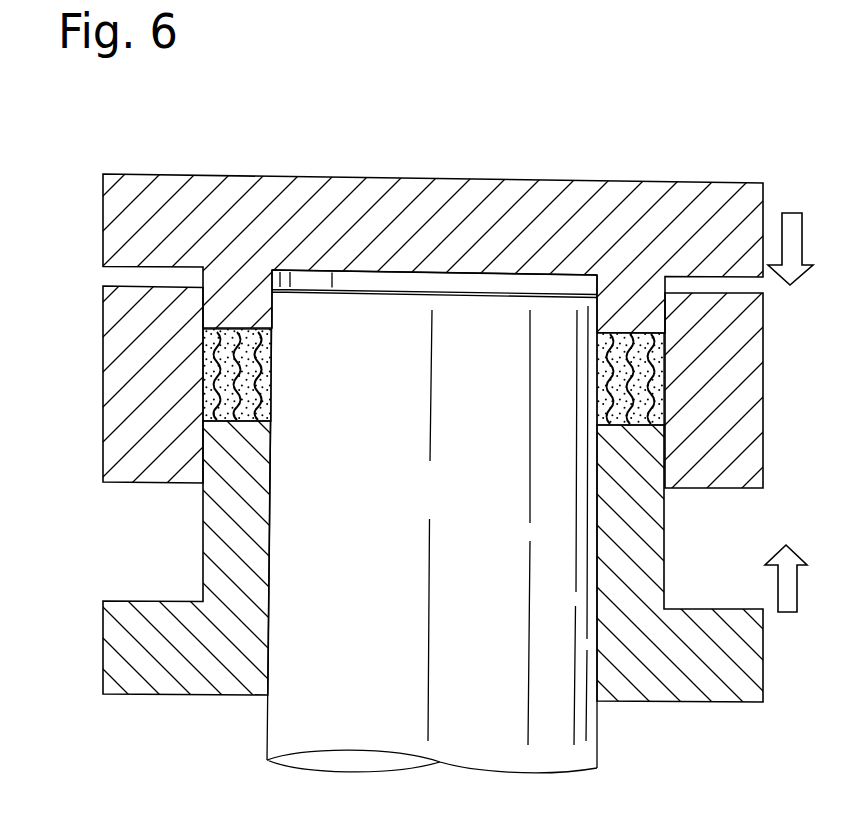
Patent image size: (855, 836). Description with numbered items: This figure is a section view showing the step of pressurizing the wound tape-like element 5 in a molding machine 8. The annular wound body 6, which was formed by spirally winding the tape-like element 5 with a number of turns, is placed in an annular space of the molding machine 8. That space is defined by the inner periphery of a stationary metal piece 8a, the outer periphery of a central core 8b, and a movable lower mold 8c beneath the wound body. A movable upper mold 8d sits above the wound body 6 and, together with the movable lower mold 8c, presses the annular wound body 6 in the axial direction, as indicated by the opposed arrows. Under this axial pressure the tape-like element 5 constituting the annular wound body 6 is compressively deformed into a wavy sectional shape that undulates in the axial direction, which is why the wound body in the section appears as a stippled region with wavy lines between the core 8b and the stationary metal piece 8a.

The tape-like element 5 is at (210, 407).
The annular wound body 6 is at (196, 344).
The molding machine 8 is at (390, 395).
The stationary metal piece 8a is at (108, 458).
The core 8b is at (404, 305).
The movable lower mold 8c is at (116, 647).
The movable upper mold 8d is at (277, 177).